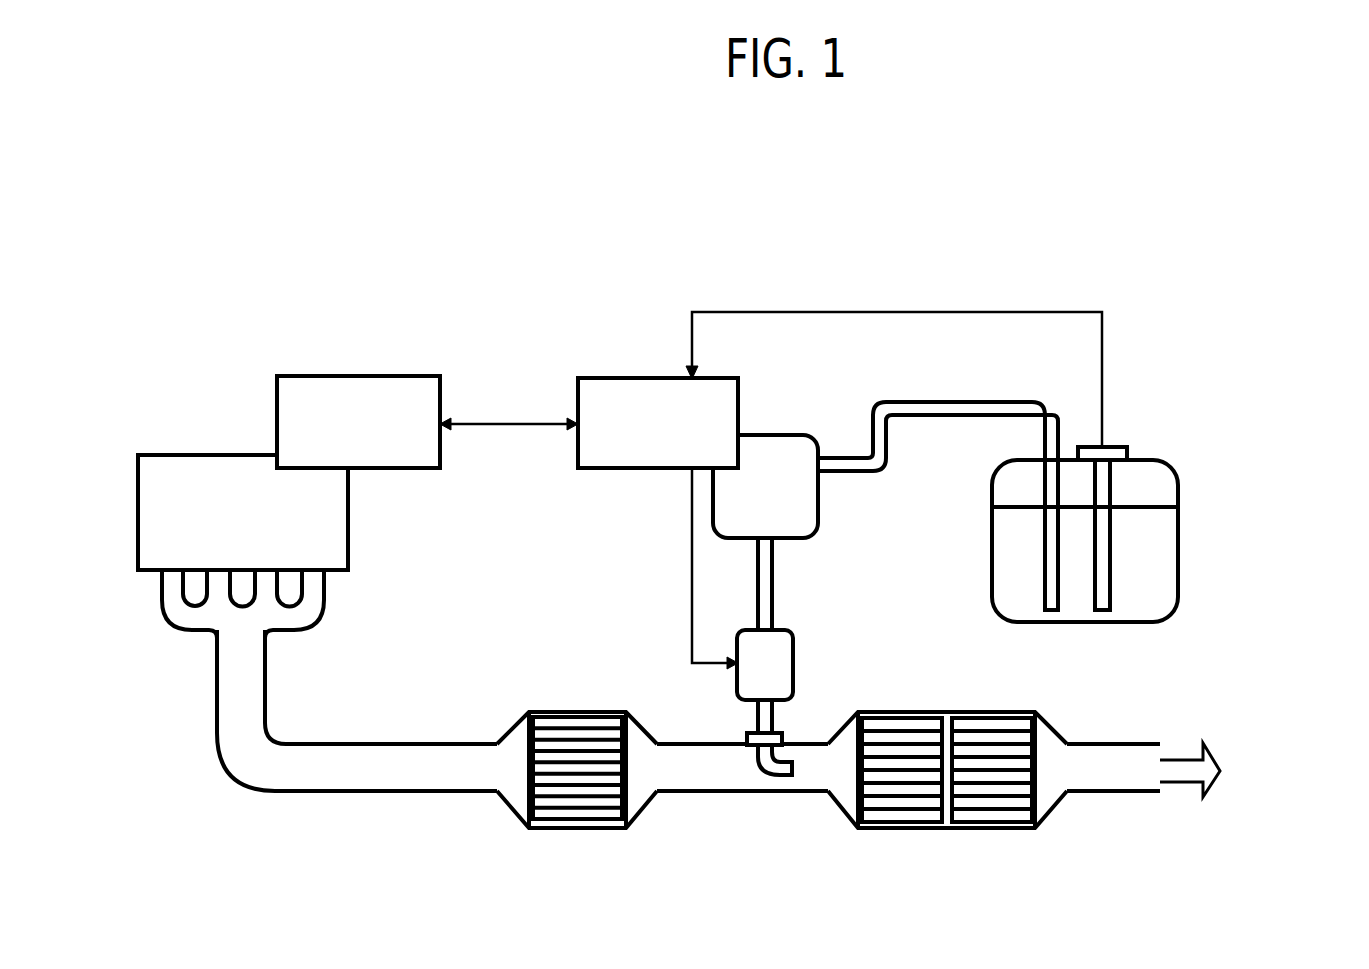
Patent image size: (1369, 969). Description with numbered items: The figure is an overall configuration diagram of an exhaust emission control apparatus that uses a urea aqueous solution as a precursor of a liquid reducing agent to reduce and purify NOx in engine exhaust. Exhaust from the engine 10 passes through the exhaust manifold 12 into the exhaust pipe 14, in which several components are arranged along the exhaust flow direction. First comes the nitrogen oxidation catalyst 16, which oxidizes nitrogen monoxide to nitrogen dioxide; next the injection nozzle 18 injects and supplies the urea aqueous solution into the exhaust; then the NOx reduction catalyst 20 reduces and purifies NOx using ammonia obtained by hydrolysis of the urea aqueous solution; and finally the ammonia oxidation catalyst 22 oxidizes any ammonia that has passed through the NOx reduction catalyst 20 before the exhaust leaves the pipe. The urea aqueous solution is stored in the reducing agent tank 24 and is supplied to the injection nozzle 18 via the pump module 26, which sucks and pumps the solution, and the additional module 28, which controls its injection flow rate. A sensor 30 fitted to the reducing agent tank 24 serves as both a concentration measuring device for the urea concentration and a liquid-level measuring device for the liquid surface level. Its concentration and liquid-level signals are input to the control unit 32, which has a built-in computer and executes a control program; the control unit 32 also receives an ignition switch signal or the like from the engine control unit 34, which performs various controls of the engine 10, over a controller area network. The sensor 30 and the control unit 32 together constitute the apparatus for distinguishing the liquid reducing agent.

The engine 10 is at (180, 455).
The exhaust manifold 12 is at (313, 593).
The exhaust pipe 14 is at (363, 742).
The nitrogen oxidation catalyst 16 is at (577, 815).
The injection nozzle 18 is at (782, 770).
The NOx reduction catalyst 20 is at (907, 817).
The ammonia oxidation catalyst 22 is at (998, 817).
The reducing agent tank 24 is at (1178, 480).
The pump module 26 is at (808, 433).
The additional module 28 is at (785, 672).
The sensor 30 is at (1108, 450).
The control unit 32 is at (607, 378).
The engine control unit 34 is at (320, 376).